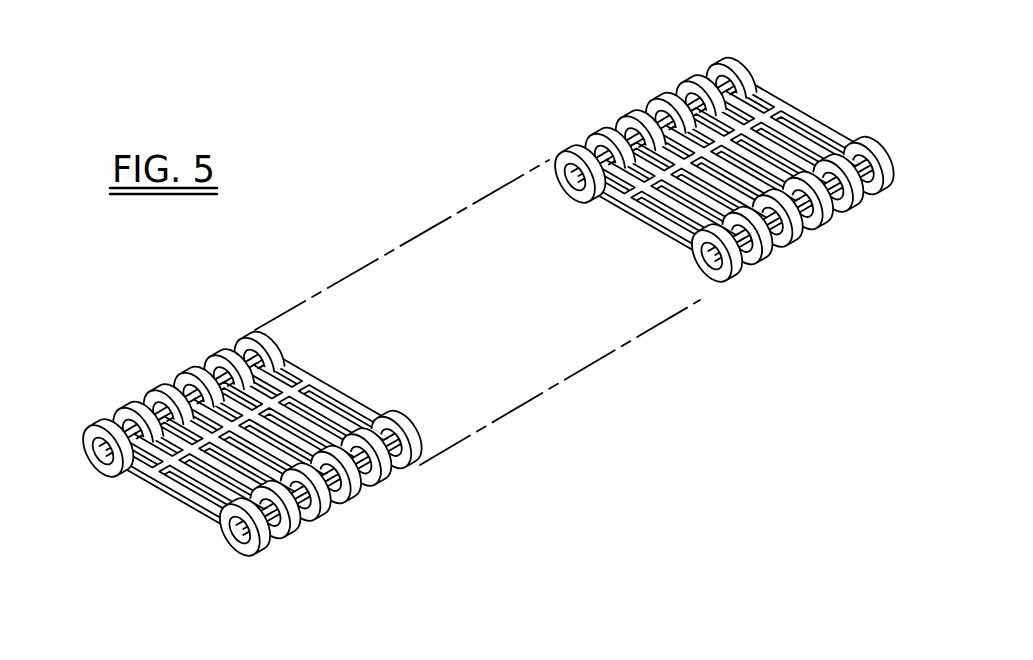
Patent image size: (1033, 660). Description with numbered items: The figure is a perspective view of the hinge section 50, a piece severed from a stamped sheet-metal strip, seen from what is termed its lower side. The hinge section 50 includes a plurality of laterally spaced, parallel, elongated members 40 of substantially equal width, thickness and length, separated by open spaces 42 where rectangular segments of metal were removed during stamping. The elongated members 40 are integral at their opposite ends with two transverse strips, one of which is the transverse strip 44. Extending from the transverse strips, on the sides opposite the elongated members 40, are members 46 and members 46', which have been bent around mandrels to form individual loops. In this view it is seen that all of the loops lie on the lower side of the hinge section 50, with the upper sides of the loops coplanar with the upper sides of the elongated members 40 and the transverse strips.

The elongated members 40 is at (747, 190).
The open spaces 42 is at (223, 488).
The transverse strip 44 is at (133, 486).
The members 46 is at (176, 374).
The members 46' is at (325, 483).
The hinge section 50 is at (794, 362).